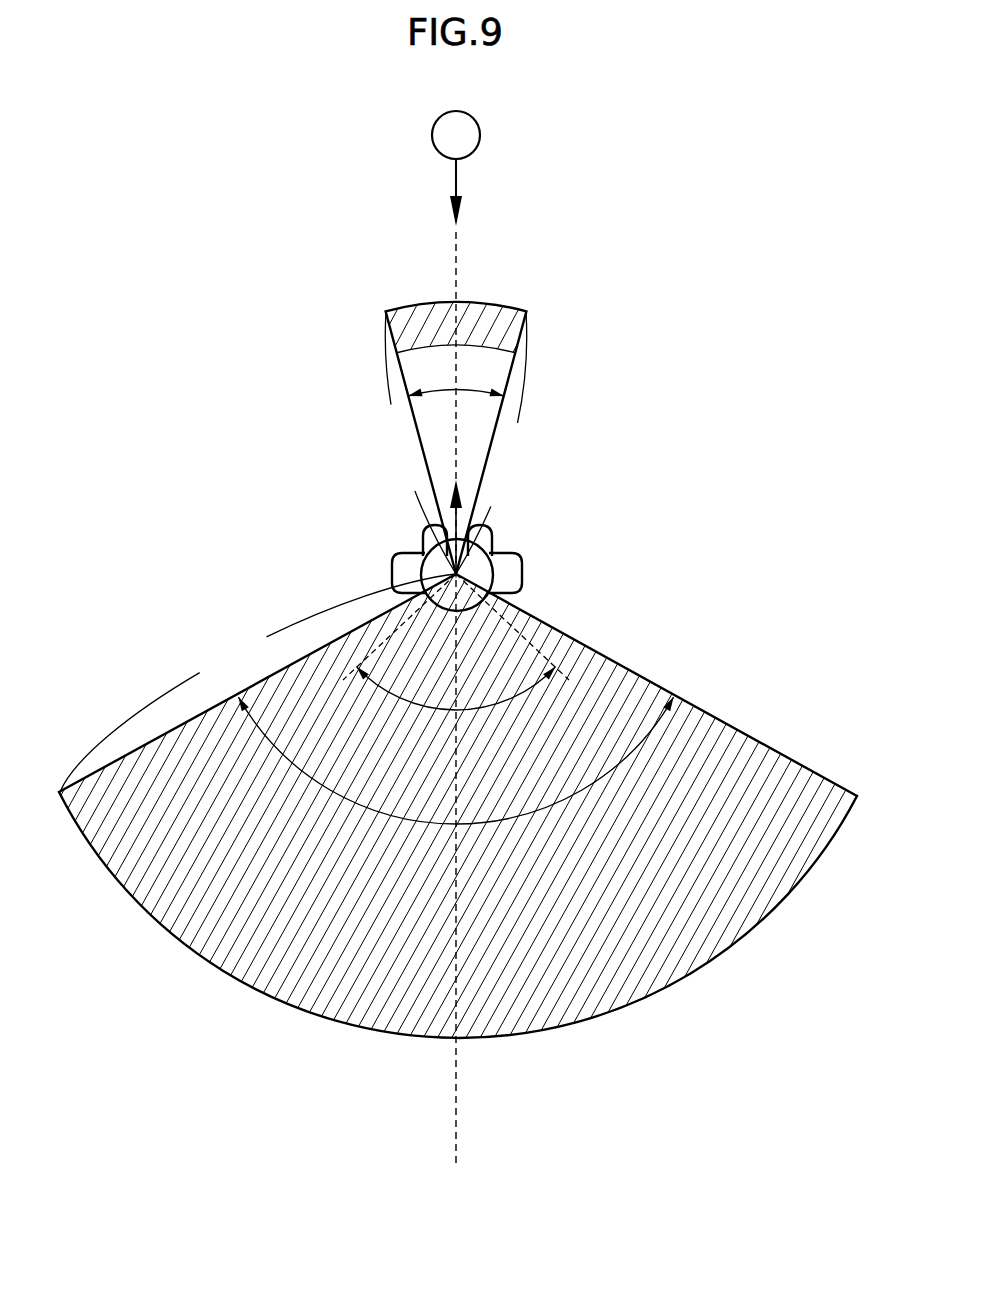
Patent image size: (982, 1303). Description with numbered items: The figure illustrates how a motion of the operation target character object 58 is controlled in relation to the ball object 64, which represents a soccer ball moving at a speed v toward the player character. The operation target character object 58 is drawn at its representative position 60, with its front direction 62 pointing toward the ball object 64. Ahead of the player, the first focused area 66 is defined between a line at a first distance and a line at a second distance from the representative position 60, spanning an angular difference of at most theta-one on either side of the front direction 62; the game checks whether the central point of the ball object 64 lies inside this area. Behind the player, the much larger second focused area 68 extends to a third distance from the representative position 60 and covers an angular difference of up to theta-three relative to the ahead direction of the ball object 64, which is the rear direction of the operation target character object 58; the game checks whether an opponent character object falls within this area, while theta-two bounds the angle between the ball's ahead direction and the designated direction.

The operation target character object 58 is at (523, 577).
The representative position 60 is at (423, 552).
The front direction 62 is at (470, 527).
The ball object 64 is at (480, 130).
The first focused area 66 is at (510, 328).
The second focused area 68 is at (300, 985).